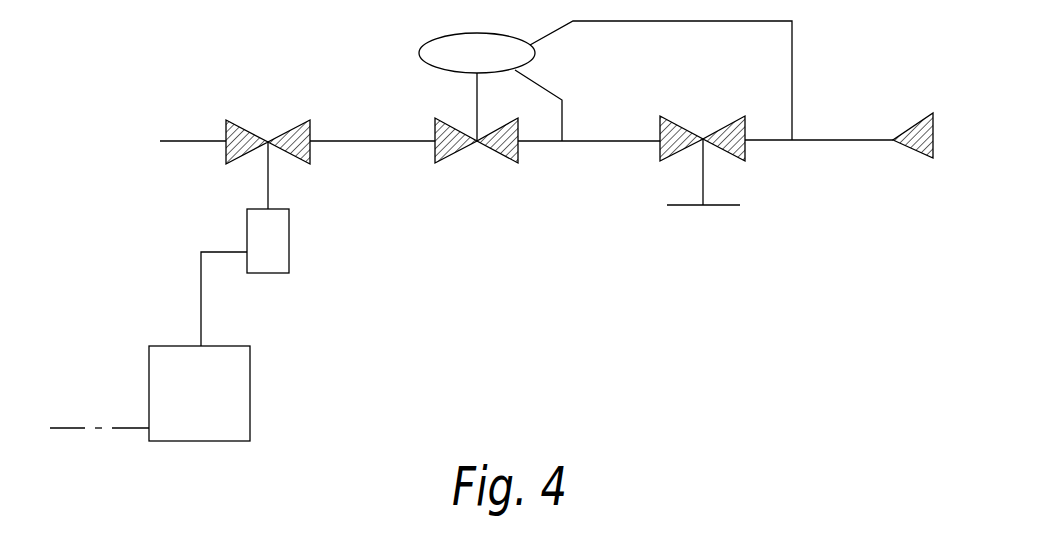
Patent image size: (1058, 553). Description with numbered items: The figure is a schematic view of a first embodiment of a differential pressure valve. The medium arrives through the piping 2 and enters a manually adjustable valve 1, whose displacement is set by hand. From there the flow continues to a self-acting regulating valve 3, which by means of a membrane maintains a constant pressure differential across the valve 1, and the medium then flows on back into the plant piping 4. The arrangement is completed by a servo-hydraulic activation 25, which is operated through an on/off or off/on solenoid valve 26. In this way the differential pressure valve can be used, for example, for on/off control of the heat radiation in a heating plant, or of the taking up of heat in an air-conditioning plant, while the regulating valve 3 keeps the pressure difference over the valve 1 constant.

The manually adjustable valve 1 is at (745, 150).
The piping 2 is at (840, 140).
The self-acting regulating valve 3 is at (435, 121).
The plant piping 4 is at (352, 141).
The servo-hydraulic activation 25 is at (305, 164).
The solenoid valve 26 is at (285, 265).